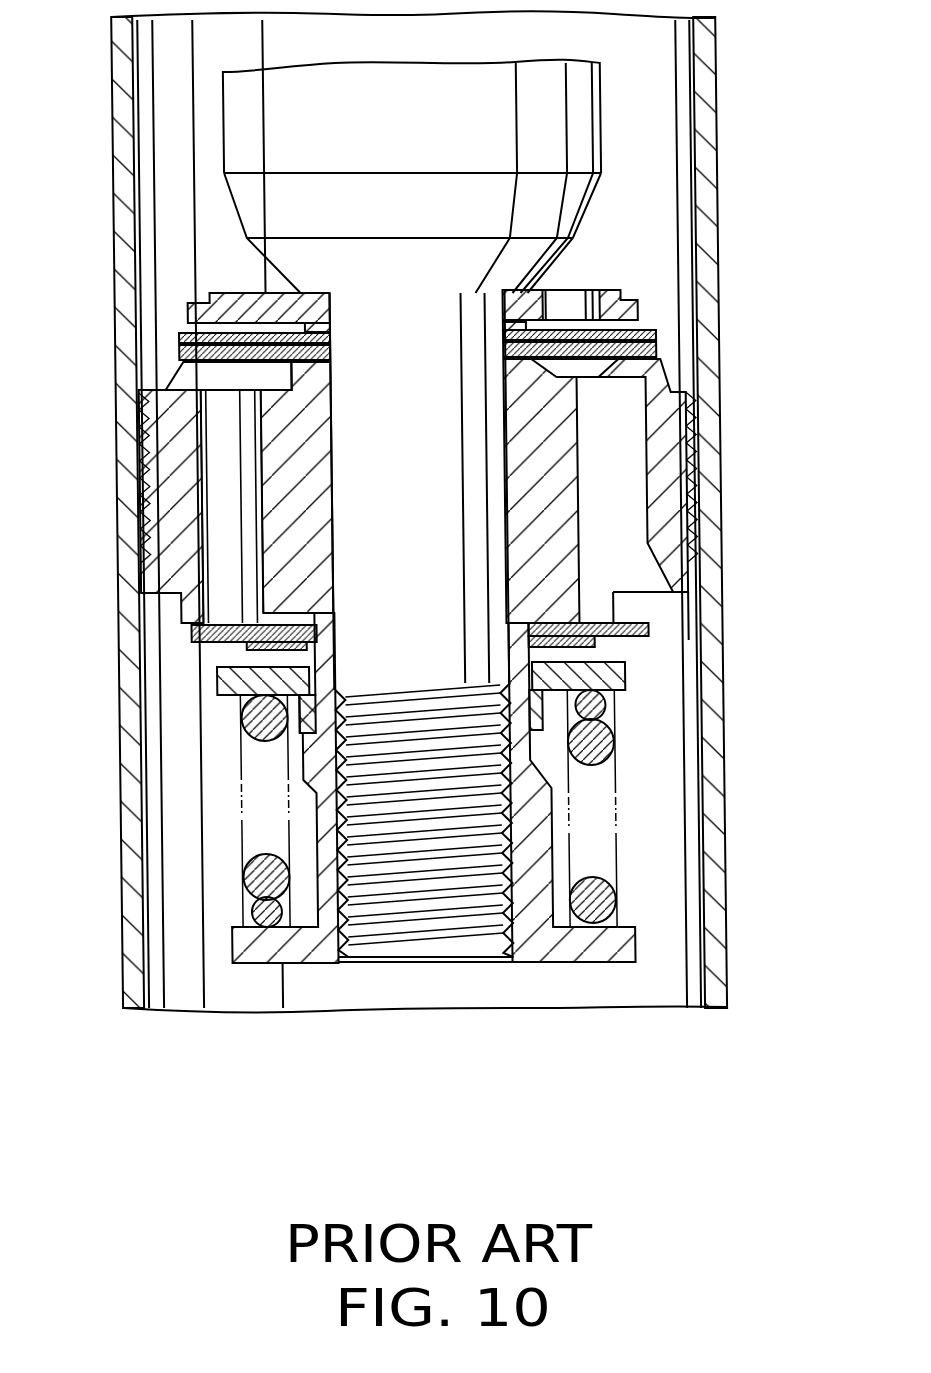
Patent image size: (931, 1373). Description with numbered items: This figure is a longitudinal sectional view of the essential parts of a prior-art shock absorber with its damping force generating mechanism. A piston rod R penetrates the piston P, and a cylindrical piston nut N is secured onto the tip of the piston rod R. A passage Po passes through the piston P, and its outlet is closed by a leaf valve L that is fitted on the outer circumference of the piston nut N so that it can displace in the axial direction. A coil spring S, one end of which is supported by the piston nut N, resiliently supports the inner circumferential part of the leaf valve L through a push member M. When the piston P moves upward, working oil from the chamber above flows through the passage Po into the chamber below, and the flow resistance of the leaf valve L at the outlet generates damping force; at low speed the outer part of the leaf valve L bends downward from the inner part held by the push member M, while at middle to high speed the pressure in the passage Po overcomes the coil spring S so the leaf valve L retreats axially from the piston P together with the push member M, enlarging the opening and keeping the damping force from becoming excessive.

The piston P is at (170, 452).
The passage Po is at (222, 527).
The piston rod R is at (473, 432).
The leaf valve L is at (662, 620).
The push member M is at (623, 677).
The coil spring S is at (240, 876).
The piston nut N is at (592, 948).